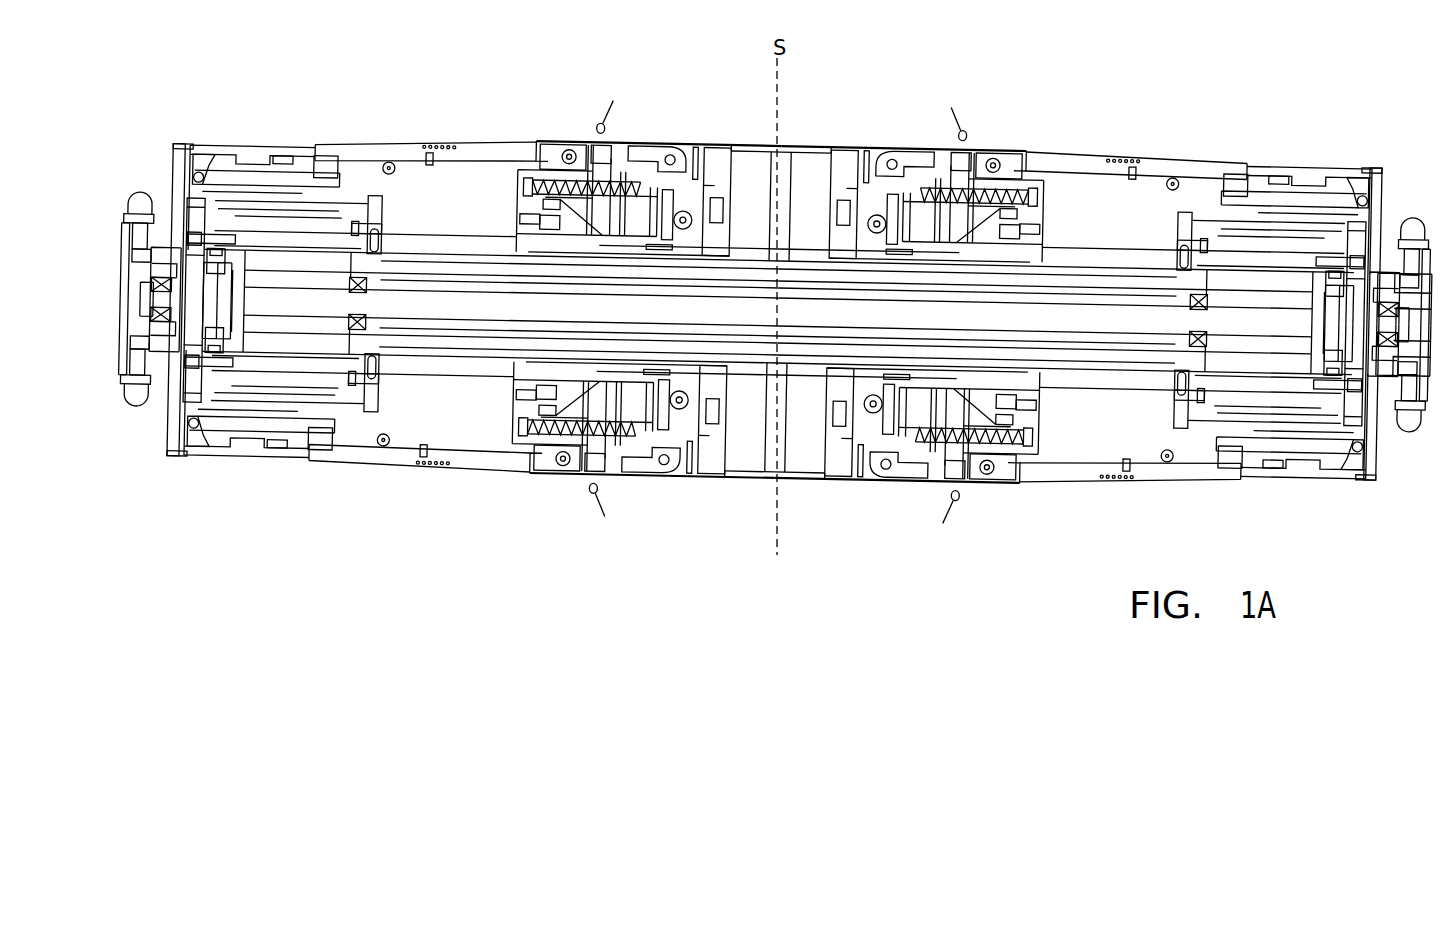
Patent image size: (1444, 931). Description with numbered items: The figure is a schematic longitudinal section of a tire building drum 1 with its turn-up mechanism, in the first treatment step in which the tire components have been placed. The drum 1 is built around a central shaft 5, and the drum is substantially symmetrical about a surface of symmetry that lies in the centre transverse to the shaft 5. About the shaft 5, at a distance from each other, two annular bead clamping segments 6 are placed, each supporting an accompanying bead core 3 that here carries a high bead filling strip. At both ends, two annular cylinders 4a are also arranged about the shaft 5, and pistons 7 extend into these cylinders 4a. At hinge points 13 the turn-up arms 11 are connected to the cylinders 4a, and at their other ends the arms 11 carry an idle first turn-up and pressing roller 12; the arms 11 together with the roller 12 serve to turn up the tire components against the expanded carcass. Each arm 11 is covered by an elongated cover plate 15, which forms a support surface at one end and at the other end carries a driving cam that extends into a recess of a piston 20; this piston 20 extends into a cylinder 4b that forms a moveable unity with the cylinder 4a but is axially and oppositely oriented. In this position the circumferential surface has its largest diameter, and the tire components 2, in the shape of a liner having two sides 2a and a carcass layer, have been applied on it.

The tire building drum 1 is at (500, 555).
The tire components 2 is at (814, 145).
The sides of the liner 2a is at (1020, 147).
The bead cores 3 is at (600, 122).
The annular cylinders 4a is at (223, 172).
The cylinder 4b is at (210, 150).
The central shaft 5 is at (747, 315).
The annular bead clamping segments 6 is at (629, 146).
The pistons 7 is at (337, 197).
The turn-up arms 11 is at (252, 150).
The turn-up and pressing roller 12 is at (566, 152).
The hinge points 13 is at (172, 152).
The cover plate 15 is at (393, 150).
The piston 20 is at (291, 160).